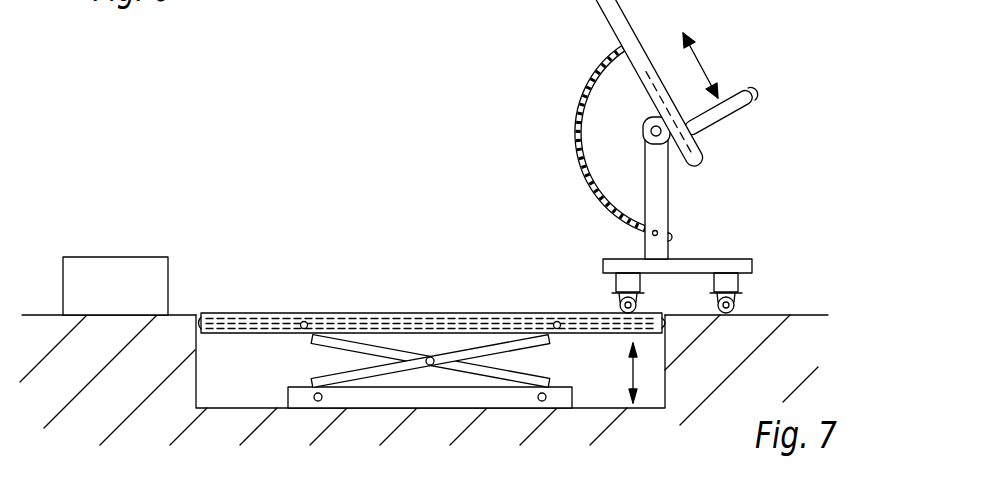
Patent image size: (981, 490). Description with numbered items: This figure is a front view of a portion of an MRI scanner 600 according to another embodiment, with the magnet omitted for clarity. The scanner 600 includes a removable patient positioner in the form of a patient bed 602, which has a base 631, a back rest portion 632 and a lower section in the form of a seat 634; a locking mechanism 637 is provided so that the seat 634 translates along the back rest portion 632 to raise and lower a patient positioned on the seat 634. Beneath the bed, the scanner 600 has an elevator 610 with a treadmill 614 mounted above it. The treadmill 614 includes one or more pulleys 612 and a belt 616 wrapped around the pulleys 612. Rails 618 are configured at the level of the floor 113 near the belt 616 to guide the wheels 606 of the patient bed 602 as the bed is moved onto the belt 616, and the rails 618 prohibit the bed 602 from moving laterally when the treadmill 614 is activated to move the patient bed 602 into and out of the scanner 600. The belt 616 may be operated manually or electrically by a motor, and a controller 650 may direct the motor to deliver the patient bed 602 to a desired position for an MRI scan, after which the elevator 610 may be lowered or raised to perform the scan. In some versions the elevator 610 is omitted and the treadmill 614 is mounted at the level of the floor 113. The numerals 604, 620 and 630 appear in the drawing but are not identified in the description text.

The floor 113 is at (767, 313).
The MRI scanner 600 is at (166, 88).
The patient bed 602 is at (682, 129).
The scissor lift mechanism 604 is at (295, 280).
The wheels 606 is at (620, 307).
The elevator 610 is at (370, 400).
The pulleys 612 is at (201, 320).
The treadmill 614 is at (261, 334).
The belt 616 is at (600, 334).
The rails 618 is at (431, 322).
The platform end cap 620 is at (197, 313).
The handle grip 630 is at (749, 89).
The base 631 is at (655, 263).
The back rest portion 632 is at (607, 20).
The seat 634 is at (722, 114).
The locking mechanism 637 is at (703, 143).
The controller 650 is at (127, 256).